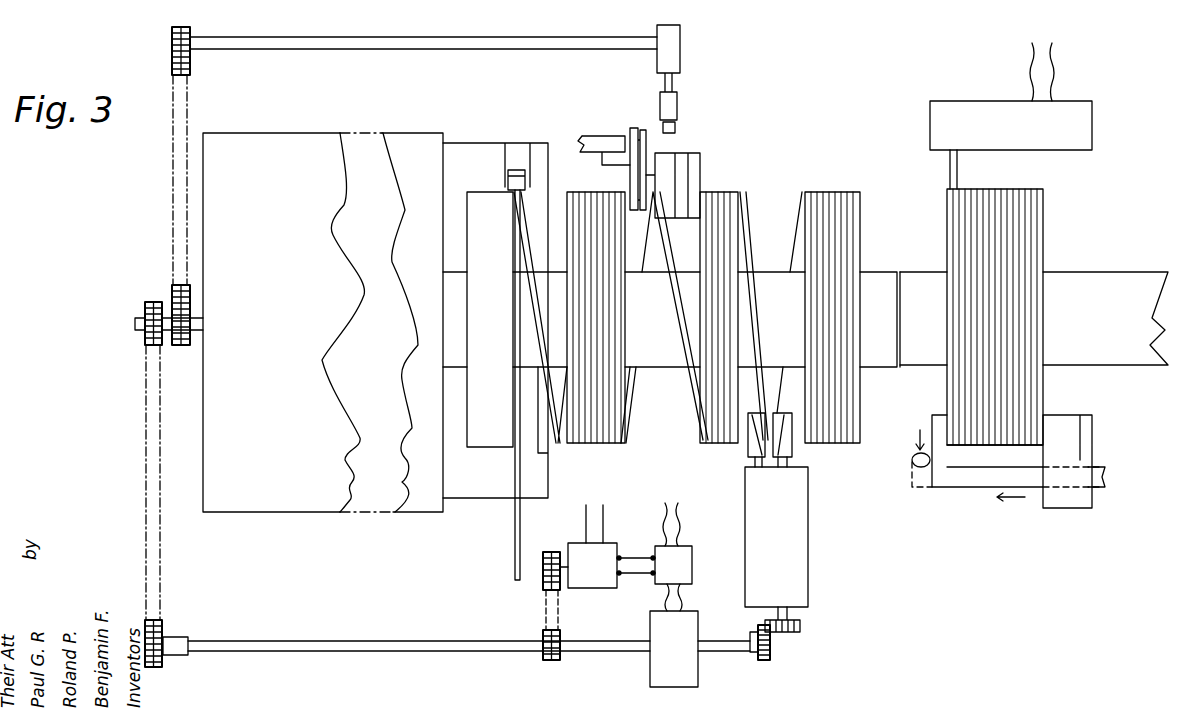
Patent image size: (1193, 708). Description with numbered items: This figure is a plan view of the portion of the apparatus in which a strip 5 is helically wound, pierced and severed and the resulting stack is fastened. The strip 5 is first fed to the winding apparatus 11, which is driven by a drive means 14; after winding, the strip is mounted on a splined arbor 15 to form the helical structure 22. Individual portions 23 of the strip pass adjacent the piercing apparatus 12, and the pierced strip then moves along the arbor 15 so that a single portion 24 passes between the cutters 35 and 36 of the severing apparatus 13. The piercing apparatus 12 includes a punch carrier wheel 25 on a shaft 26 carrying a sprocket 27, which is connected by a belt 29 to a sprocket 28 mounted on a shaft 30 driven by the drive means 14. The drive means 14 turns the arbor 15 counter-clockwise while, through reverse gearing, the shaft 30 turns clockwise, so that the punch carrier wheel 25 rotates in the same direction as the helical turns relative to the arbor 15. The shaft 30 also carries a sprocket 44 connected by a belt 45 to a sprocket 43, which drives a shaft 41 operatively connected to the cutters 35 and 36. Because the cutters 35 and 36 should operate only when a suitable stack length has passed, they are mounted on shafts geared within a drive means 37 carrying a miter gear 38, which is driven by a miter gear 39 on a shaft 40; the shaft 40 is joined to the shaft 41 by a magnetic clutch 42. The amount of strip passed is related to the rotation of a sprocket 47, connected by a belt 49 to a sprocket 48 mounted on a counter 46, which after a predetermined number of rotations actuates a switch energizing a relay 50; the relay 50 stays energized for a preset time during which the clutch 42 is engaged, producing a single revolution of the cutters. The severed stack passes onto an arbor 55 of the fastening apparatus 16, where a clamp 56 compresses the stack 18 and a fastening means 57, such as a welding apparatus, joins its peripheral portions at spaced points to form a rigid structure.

The strip 5 is at (514, 567).
The winding apparatus 11 is at (487, 212).
The piercing apparatus 12 is at (672, 192).
The severing apparatus 13 is at (797, 531).
The drive means 14 is at (437, 135).
The splined arbor 15 is at (765, 276).
The fastening apparatus 16 is at (986, 106).
The stack 18 is at (995, 214).
The helical structure 22 is at (605, 200).
The individual portions 23 is at (662, 248).
The single portion 24 is at (754, 315).
The punch carrier wheel 25 is at (672, 66).
The shaft 26 is at (553, 50).
The sprocket 27 is at (170, 47).
The sprocket 28 is at (178, 300).
The belt 29 is at (188, 98).
The shaft 30 is at (195, 323).
The cutter 35 is at (754, 413).
The cutter 36 is at (784, 413).
The drive means 37 is at (798, 562).
The miter gear 38 is at (796, 630).
The miter gear 39 is at (770, 653).
The shaft 40 is at (733, 653).
The shaft 41 is at (333, 646).
The magnetic clutch 42 is at (698, 628).
The sprocket 43 is at (160, 668).
The sprocket 44 is at (145, 316).
The belt 45 is at (160, 531).
The counter 46 is at (588, 546).
The sprocket 47 is at (558, 661).
The sprocket 48 is at (558, 552).
The belt 49 is at (560, 611).
The relay 50 is at (692, 561).
The arbor 55 is at (1062, 284).
The clamp 56 is at (980, 488).
The fastening means 57 is at (948, 177).